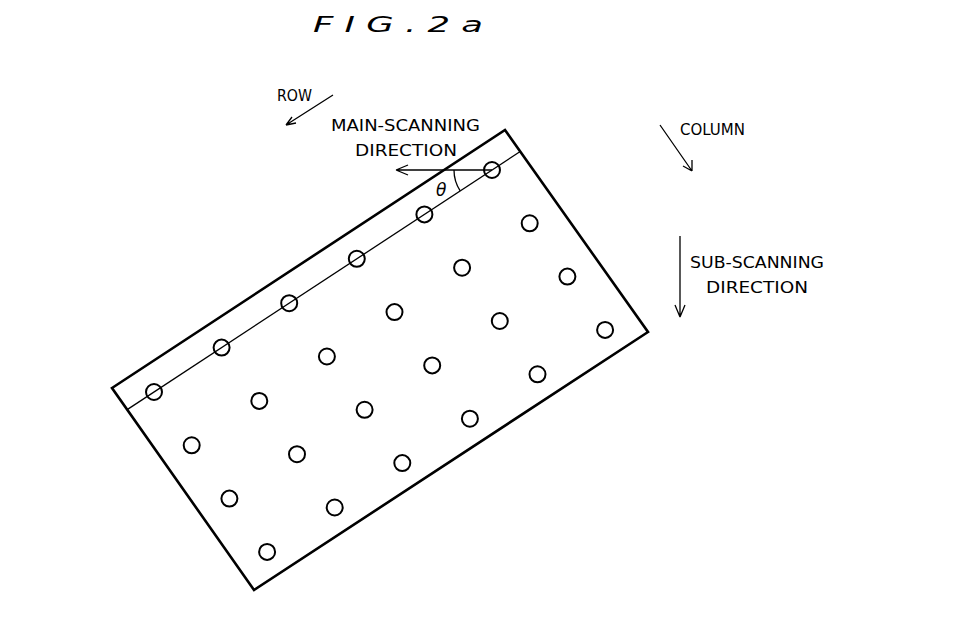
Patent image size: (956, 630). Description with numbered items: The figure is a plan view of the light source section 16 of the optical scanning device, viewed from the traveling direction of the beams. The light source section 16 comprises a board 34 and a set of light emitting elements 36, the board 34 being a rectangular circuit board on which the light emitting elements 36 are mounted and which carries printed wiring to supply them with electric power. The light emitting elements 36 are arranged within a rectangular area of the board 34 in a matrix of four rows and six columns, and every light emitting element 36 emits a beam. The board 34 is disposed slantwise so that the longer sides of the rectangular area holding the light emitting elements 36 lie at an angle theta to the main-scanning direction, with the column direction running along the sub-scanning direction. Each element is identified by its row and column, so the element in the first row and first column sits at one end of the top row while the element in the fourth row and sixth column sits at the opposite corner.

The light source section 16 is at (147, 131).
The board 34 is at (247, 300).
The light emitting elements 36 is at (418, 208).